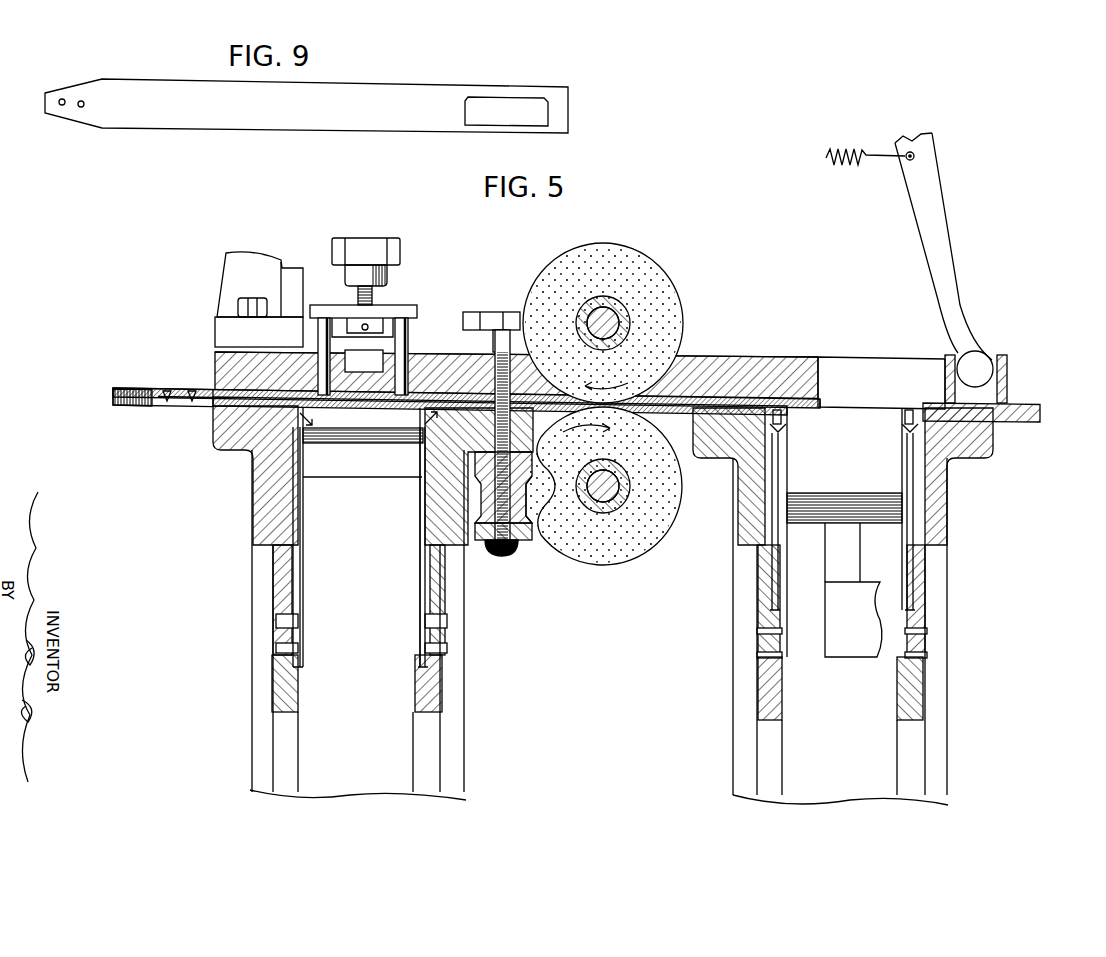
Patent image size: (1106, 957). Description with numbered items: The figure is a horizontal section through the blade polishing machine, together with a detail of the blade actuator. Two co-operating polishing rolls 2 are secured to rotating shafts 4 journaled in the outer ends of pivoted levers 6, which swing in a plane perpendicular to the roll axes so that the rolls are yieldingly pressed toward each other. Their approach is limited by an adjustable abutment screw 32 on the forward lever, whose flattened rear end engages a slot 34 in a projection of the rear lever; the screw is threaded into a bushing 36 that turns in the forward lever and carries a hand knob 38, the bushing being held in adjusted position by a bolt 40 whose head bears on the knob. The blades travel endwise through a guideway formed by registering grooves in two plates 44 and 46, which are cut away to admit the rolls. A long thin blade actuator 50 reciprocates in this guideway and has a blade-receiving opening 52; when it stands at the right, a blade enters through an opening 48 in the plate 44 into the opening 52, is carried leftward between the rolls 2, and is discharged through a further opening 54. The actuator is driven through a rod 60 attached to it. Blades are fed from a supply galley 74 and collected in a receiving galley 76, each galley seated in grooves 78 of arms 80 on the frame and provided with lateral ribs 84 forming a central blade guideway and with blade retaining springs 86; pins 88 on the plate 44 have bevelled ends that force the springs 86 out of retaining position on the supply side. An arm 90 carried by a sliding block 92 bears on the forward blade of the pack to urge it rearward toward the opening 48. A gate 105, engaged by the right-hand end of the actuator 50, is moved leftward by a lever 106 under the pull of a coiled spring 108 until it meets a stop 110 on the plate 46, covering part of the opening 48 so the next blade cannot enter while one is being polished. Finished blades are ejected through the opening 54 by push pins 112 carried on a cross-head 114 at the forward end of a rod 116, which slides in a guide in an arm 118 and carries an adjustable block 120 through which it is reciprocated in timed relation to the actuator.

In FIG. 5, the polishing rolls 2 is at (676, 290).
In FIG. 5, the rotating shafts 4 is at (630, 325).
In FIG. 5, the pivoted levers 6 is at (533, 492).
In FIG. 5, the adjustable abutment screw 32 is at (481, 528).
In FIG. 5, the slot 34 is at (495, 386).
In FIG. 5, the bushing 36 is at (523, 540).
In FIG. 5, the hand knob 38 is at (515, 545).
In FIG. 5, the bolt 40 is at (507, 557).
In FIG. 5, the plate 44 is at (768, 357).
In FIG. 5, the plate 46 is at (725, 357).
In FIG. 5, the opening 48 is at (853, 408).
In FIG. 9, the blade actuator 50 is at (313, 125).
In FIG. 5, the blade actuator 50 is at (887, 408).
In FIG. 9, the blade-receiving opening 52 is at (496, 102).
In FIG. 5, the opening 54 is at (333, 403).
In FIG. 5, the rod 60 is at (153, 407).
In FIG. 5, the supply galley 74 is at (920, 690).
In FIG. 5, the receiving galley 76 is at (282, 672).
In FIG. 5, the grooves 78 is at (442, 733).
In FIG. 5, the arms 80 is at (467, 695).
In FIG. 5, the lateral ribs 84 is at (412, 762).
In FIG. 5, the blade retaining springs 86 is at (423, 535).
In FIG. 5, the pins 88 is at (782, 422).
In FIG. 5, the arm 90 is at (852, 550).
In FIG. 5, the block 92 is at (850, 652).
In FIG. 5, the gate 105 is at (1005, 380).
In FIG. 5, the lever 106 is at (932, 198).
In FIG. 5, the coiled spring 108 is at (843, 163).
In FIG. 5, the stop 110 is at (822, 402).
In FIG. 5, the push pins 112 is at (320, 326).
In FIG. 5, the cross-head 114 is at (390, 307).
In FIG. 5, the rod 116 is at (357, 296).
In FIG. 5, the arm 118 is at (280, 260).
In FIG. 5, the block 120 is at (380, 250).